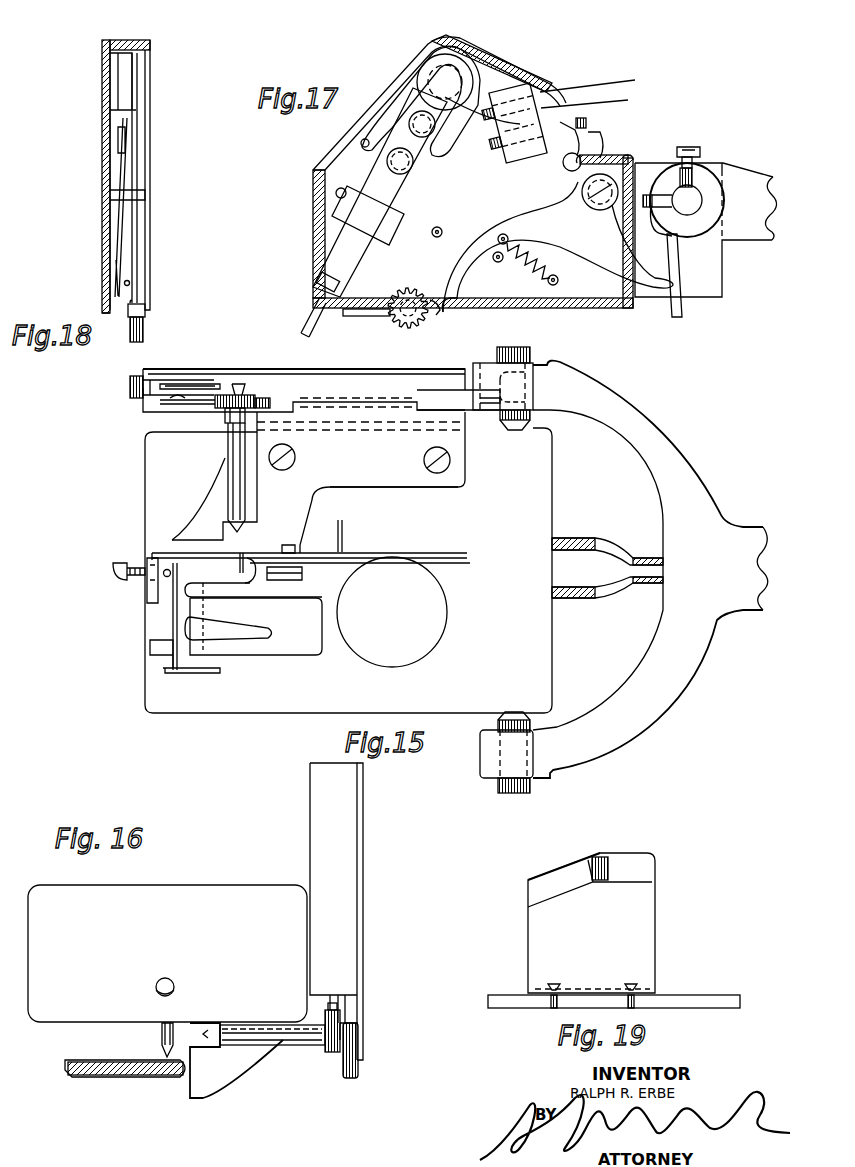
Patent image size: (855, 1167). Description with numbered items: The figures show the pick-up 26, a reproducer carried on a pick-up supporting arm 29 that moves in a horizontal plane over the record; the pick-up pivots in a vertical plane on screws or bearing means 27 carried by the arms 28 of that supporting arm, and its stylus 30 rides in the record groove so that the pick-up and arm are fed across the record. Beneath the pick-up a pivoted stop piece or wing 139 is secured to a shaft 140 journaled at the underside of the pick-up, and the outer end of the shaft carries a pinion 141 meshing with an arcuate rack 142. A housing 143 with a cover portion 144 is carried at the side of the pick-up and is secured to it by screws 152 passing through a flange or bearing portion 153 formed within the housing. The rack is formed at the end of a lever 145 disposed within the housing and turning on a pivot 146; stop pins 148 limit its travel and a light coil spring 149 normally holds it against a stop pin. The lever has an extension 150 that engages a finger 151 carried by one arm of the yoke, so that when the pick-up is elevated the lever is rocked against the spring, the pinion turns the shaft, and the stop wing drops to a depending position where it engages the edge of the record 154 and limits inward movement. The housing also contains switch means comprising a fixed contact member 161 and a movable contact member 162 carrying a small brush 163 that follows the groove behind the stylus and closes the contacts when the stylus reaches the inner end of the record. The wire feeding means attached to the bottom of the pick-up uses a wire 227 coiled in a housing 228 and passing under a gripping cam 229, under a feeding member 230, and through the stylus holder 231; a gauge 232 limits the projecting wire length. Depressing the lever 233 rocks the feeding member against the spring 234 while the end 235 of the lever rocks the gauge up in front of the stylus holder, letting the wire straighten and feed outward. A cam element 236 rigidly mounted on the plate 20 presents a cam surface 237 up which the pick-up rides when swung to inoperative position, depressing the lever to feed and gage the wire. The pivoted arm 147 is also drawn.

In FIG. 19, the plate 20 is at (700, 998).
In FIG. 15, the pick-up 26 is at (527, 654).
In FIG. 16, the pick-up 26 is at (195, 915).
In FIG. 17, the screws or bearing means 27 is at (690, 200).
In FIG. 15, the screws or bearing means 27 is at (468, 823).
In FIG. 17, the arms 28 is at (752, 225).
In FIG. 15, the arms 28 is at (685, 745).
In FIG. 15, the pick-up supporting arm 29 is at (755, 528).
In FIG. 16, the stylus 30 is at (162, 1035).
In FIG. 17, the pivoted stop piece or wing 139 is at (355, 316).
In FIG. 15, the pivoted stop piece or wing 139 is at (200, 477).
In FIG. 16, the pivoted stop piece or wing 139 is at (203, 1080).
In FIG. 17, the shaft 140 is at (402, 312).
In FIG. 15, the shaft 140 is at (245, 488).
In FIG. 16, the shaft 140 is at (268, 1045).
In FIG. 17, the pinion 141 is at (408, 326).
In FIG. 15, the pinion 141 is at (240, 395).
In FIG. 16, the pinion 141 is at (333, 1052).
In FIG. 17, the arcuate rack 142 is at (436, 315).
In FIG. 15, the arcuate rack 142 is at (265, 398).
In FIG. 18, the housing 143 is at (102, 182).
In FIG. 17, the housing 143 is at (545, 65).
In FIG. 15, the housing 143 is at (143, 424).
In FIG. 16, the housing 143 is at (345, 938).
In FIG. 17, the cover portion 144 is at (430, 114).
In FIG. 15, the cover portion 144 is at (230, 369).
In FIG. 16, the cover portion 144 is at (363, 895).
In FIG. 17, the lever 145 is at (520, 195).
In FIG. 17, the pivot 146 is at (600, 182).
In FIG. 17, the pivoted arm 147 is at (410, 192).
In FIG. 17, the stop pins 148 is at (496, 312).
In FIG. 17, the light coil spring 149 is at (552, 285).
In FIG. 17, the extension 150 is at (665, 262).
In FIG. 15, the extension 150 is at (490, 400).
In FIG. 17, the finger 151 is at (682, 308).
In FIG. 15, the screws 152 is at (425, 458).
In FIG. 15, the flange or bearing portion 153 is at (385, 473).
In FIG. 16, the record 154 is at (138, 1080).
In FIG. 18, the fixed contact member 161 is at (118, 255).
In FIG. 15, the fixed contact member 161 is at (185, 398).
In FIG. 18, the movable contact member 162 is at (137, 268).
In FIG. 15, the movable contact member 162 is at (163, 383).
In FIG. 16, the movable contact member 162 is at (350, 1005).
In FIG. 18, the brush 163 is at (143, 325).
In FIG. 15, the brush 163 is at (135, 398).
In FIG. 16, the brush 163 is at (358, 1075).
In FIG. 15, the wire 227 is at (345, 520).
In FIG. 15, the housing 228 is at (430, 607).
In FIG. 15, the gripping cam 229 is at (290, 570).
In FIG. 15, the feeding member 230 is at (222, 573).
In FIG. 15, the stylus holder 231 is at (163, 576).
In FIG. 15, the gauge 232 is at (145, 572).
In FIG. 15, the lever 233 is at (360, 550).
In FIG. 15, the spring 234 is at (220, 610).
In FIG. 15, the end of the lever 235 is at (158, 552).
In FIG. 15, the cam element 236 is at (607, 568).
In FIG. 19, the cam element 236 is at (630, 933).
In FIG. 19, the cam surface 237 is at (568, 870).